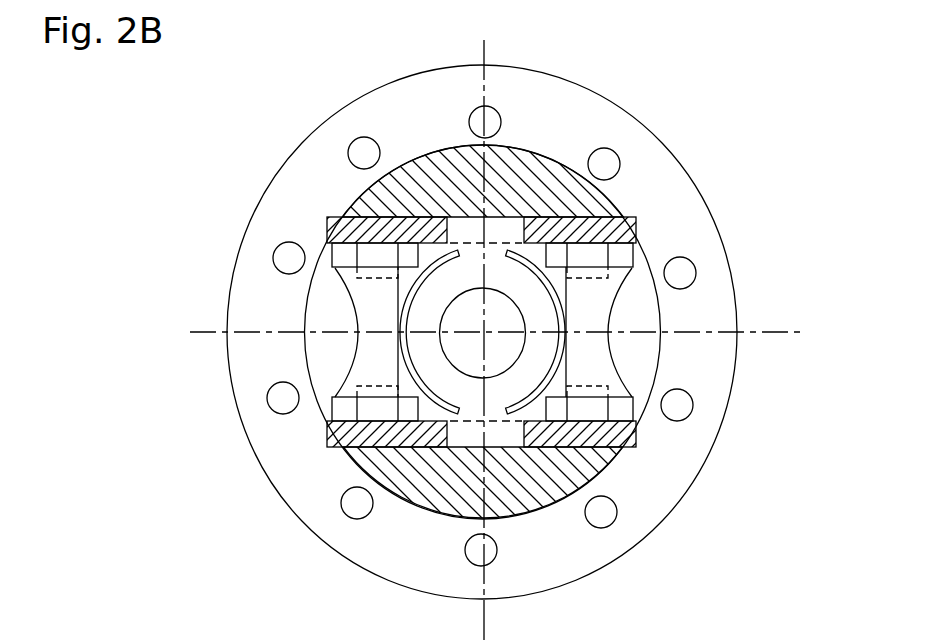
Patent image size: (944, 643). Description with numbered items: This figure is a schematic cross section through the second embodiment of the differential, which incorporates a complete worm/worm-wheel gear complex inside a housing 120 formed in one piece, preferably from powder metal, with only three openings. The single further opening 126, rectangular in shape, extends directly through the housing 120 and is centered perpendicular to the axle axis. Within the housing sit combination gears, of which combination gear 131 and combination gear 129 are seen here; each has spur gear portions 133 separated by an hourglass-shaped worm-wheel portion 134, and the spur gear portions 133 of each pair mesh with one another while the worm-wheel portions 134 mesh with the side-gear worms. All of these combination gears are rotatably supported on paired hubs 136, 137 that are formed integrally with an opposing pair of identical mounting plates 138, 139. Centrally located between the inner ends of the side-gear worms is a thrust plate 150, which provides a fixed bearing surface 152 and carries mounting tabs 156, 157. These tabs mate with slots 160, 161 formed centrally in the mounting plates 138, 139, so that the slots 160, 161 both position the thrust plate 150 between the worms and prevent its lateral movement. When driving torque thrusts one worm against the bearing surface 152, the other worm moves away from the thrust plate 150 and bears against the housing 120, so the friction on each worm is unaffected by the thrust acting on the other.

The housing 120 is at (585, 98).
The single further opening 126 is at (622, 217).
The combination gear 129 is at (268, 404).
The combination gear 131 is at (620, 385).
The spur gear portion 133 is at (421, 276).
The worm-wheel portion 134 is at (362, 378).
The hub 136 is at (350, 258).
The hub 137 is at (370, 449).
The mounting plate 138 is at (330, 244).
The mounting plate 139 is at (335, 415).
The thrust plate 150 is at (556, 315).
The bearing surface 152 is at (537, 362).
The mounting tab 156 is at (462, 225).
The mounting tab 157 is at (470, 445).
The slot 160 is at (450, 215).
The slot 161 is at (510, 448).